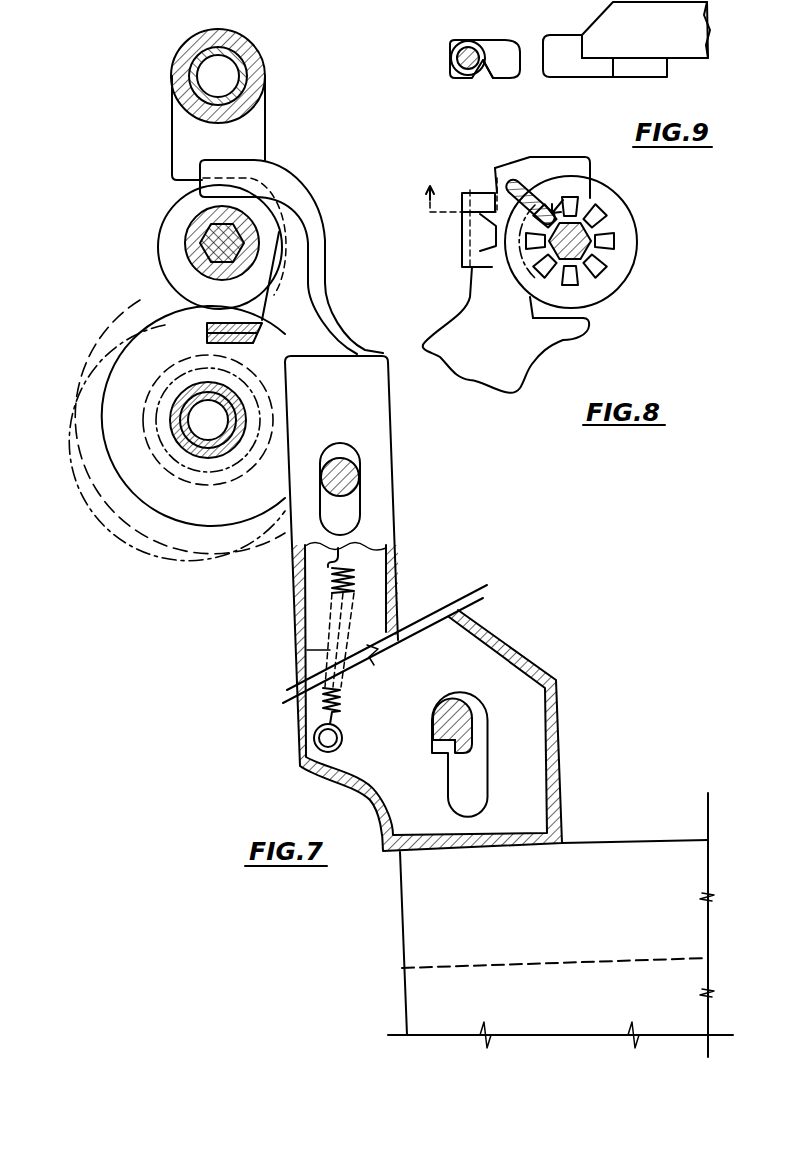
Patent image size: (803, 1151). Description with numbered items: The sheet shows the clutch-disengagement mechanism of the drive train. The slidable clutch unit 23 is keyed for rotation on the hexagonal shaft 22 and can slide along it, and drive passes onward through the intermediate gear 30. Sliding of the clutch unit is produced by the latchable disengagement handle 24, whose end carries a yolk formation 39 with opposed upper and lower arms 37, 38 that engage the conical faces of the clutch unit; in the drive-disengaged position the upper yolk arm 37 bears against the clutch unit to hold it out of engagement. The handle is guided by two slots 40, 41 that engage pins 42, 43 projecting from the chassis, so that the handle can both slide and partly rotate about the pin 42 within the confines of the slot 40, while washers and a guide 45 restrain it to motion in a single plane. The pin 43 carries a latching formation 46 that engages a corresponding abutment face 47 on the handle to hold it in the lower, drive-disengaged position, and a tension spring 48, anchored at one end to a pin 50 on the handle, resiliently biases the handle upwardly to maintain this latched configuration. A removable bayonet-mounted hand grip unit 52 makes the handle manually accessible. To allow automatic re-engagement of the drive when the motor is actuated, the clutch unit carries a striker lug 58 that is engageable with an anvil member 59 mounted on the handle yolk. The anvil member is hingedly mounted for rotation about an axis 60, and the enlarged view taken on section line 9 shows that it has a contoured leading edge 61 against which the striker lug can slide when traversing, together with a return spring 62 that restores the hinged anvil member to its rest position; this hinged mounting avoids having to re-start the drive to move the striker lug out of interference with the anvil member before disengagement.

In FIG. 8, the section line 9— 9 is at (485, 197).
In FIG. 7, the hexagonal shaft 22 is at (207, 250).
In FIG. 7, the slidable clutch unit 23 is at (168, 223).
In FIG. 8, the slidable clutch unit 23 is at (623, 220).
In FIG. 9, the slidable clutch unit 23 is at (646, 30).
In FIG. 7, the latchable disengagement handle 24 is at (390, 531).
In FIG. 7, the intermediate gear 30 is at (123, 452).
In FIG. 7, the upper yolk arm 37 is at (265, 173).
In FIG. 8, the upper yolk arm 37 is at (545, 167).
In FIG. 7, the lower yolk arm 38 is at (227, 337).
In FIG. 8, the lower yolk arm 38 is at (560, 337).
In FIG. 7, the yolk formation 39 is at (303, 318).
In FIG. 8, the yolk formation 39 is at (472, 317).
In FIG. 7, the slot 40 is at (352, 507).
In FIG. 7, the slot 41 is at (477, 767).
In FIG. 7, the pin 42 is at (352, 475).
In FIG. 7, the pin 43 is at (460, 713).
In FIG. 7, the guide 45 is at (187, 140).
In FIG. 7, the latching formation 46 is at (442, 743).
In FIG. 7, the abutment face 47 is at (430, 748).
In FIG. 7, the tension spring 48 is at (338, 620).
In FIG. 7, the pin 50 is at (314, 738).
In FIG. 7, the hand grip unit 52 is at (425, 922).
In FIG. 8, the striker lug 58 is at (520, 182).
In FIG. 9, the striker lug 58 is at (572, 67).
In FIG. 8, the anvil member 59 is at (480, 235).
In FIG. 9, the anvil member 59 is at (497, 45).
In FIG. 9, the axis 60 is at (452, 67).
In FIG. 9, the contoured leading edge 61 is at (517, 78).
In FIG. 8, the return spring 62 is at (462, 186).
In FIG. 9, the return spring 62 is at (472, 40).